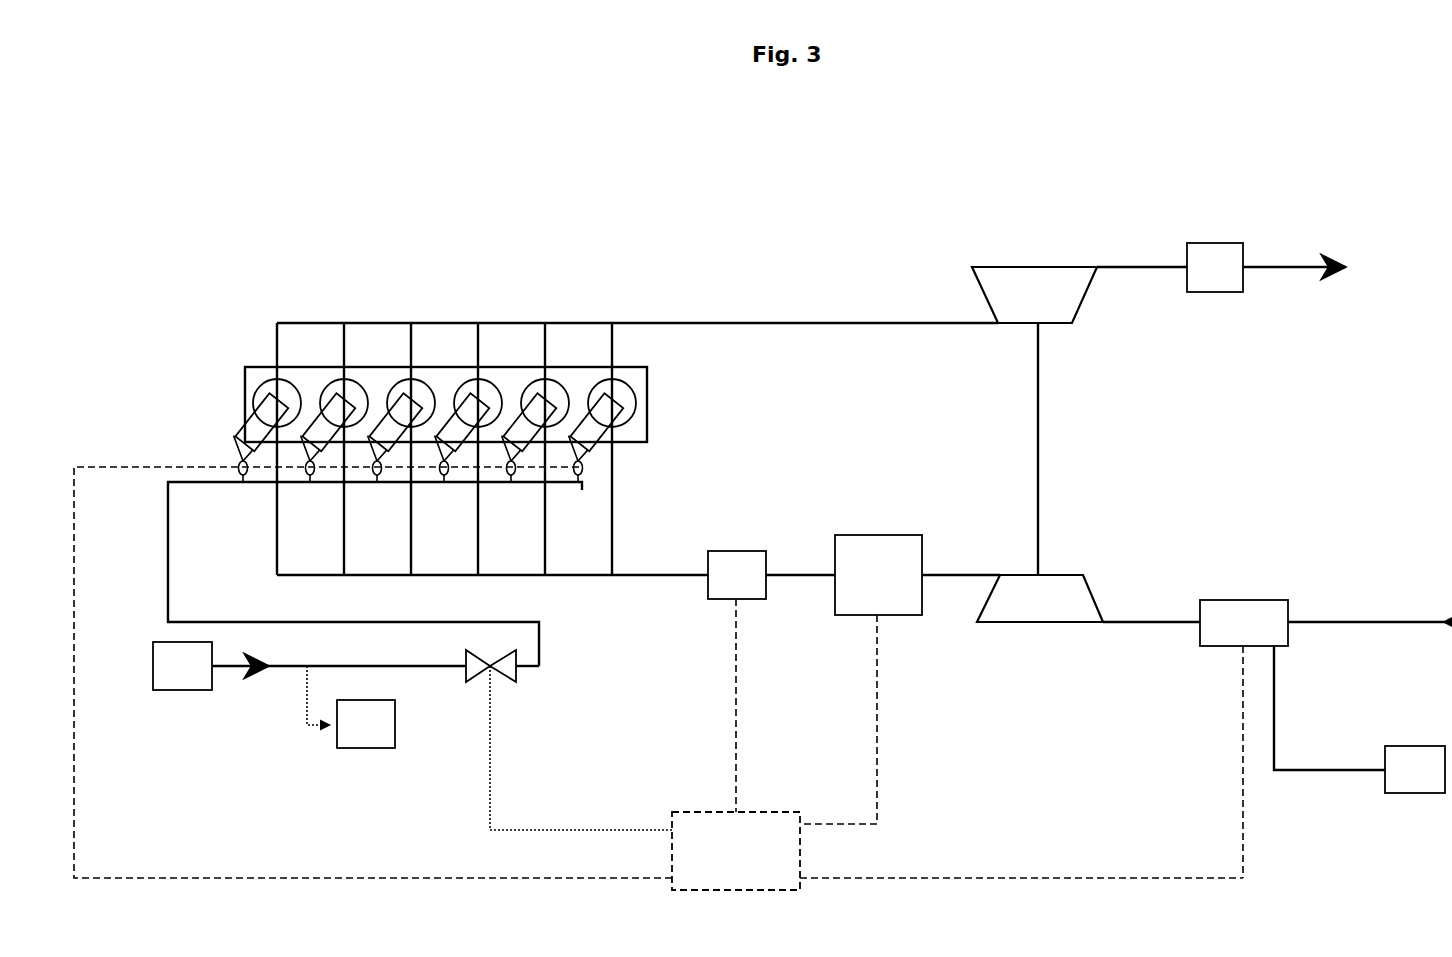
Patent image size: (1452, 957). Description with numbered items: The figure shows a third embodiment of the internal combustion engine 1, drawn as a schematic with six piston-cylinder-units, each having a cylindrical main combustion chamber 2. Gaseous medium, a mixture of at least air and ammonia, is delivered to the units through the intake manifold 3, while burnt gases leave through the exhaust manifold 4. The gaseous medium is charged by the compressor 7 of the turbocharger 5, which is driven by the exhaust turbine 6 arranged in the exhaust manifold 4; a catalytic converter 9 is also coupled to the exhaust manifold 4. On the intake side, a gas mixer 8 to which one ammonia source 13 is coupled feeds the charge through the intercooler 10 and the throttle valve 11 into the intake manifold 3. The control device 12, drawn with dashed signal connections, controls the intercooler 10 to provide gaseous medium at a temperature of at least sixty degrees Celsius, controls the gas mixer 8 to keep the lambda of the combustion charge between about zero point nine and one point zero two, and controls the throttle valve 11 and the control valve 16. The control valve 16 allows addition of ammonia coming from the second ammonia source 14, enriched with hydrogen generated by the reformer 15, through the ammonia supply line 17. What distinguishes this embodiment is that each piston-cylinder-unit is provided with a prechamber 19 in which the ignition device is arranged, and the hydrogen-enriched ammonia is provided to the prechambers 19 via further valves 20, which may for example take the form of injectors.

The internal combustion engine 1 is at (166, 172).
The main combustion chamber 2 is at (405, 385).
The intake manifold 3 is at (637, 565).
The exhaust manifold 4 is at (765, 322).
The turbocharger 5 is at (1055, 443).
The exhaust turbine 6 is at (1030, 290).
The compressor 7 is at (1035, 605).
The gas mixer 8 is at (1228, 602).
The catalytic converter 9 is at (1213, 255).
The intercooler 10 is at (865, 548).
The throttle valve 11 is at (735, 560).
The control device 12 is at (658, 678).
The ammonia source 13 is at (1402, 768).
The ammonia source 14 is at (183, 660).
The reformer 15 is at (375, 742).
The control valve 16 is at (495, 672).
The ammonia supply line 17 is at (168, 575).
The prechamber 19 is at (440, 420).
The valve provided to prechamber 20 is at (444, 478).